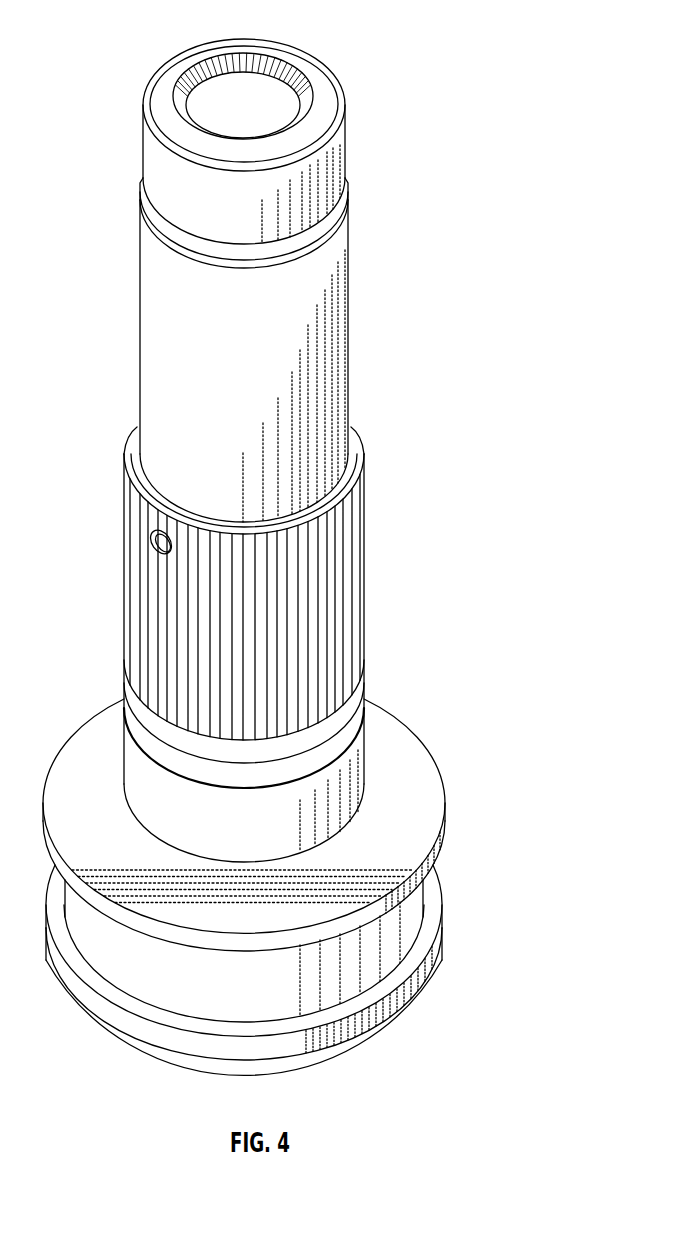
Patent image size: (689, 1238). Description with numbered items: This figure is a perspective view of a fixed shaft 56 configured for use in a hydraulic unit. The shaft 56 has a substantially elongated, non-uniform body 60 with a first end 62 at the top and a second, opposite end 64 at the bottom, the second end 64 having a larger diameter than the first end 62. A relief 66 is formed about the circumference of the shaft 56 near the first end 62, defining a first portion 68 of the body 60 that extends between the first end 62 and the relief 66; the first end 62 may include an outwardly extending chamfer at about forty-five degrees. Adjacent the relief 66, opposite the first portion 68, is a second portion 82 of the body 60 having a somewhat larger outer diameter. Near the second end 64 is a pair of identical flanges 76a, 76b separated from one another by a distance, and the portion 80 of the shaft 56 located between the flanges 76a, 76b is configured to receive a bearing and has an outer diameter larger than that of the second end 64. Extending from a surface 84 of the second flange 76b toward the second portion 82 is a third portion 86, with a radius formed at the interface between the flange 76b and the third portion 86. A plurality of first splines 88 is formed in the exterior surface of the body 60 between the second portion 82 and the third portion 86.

The fixed shaft 56 is at (534, 75).
The first end 62 is at (177, 58).
The first portion 68 is at (334, 165).
The relief 66 is at (339, 207).
The second portion 82 is at (321, 297).
The body 60 is at (132, 570).
The first splines 88 is at (334, 602).
The third portion 86 is at (147, 789).
The surface 84 is at (418, 752).
The second flange 76b is at (452, 830).
The portion between the flanges 80 is at (414, 917).
The first flange 76a is at (456, 944).
The second end 64 is at (295, 1072).